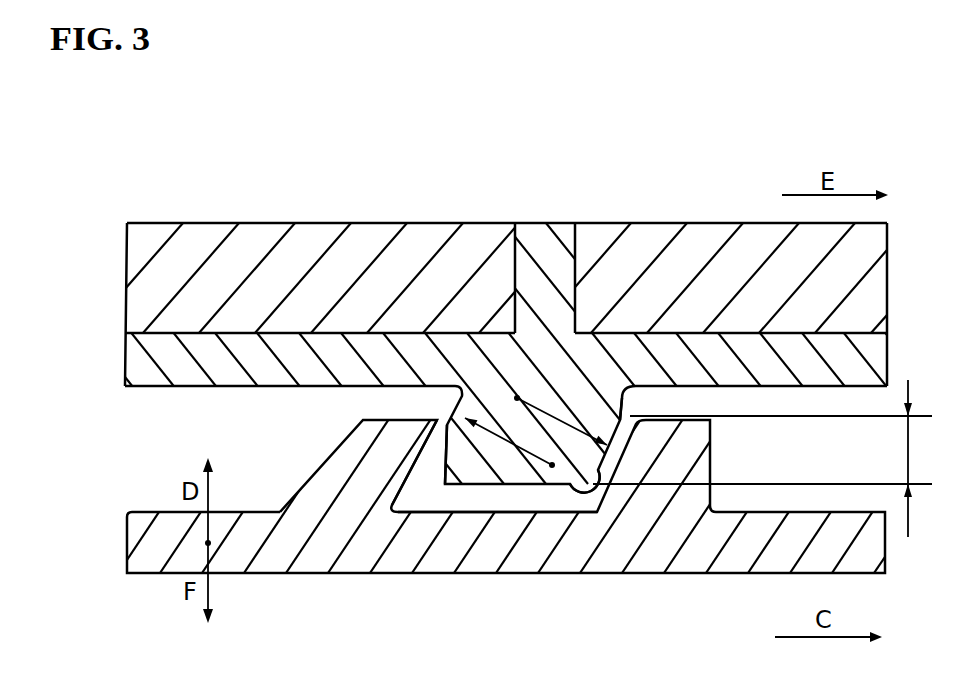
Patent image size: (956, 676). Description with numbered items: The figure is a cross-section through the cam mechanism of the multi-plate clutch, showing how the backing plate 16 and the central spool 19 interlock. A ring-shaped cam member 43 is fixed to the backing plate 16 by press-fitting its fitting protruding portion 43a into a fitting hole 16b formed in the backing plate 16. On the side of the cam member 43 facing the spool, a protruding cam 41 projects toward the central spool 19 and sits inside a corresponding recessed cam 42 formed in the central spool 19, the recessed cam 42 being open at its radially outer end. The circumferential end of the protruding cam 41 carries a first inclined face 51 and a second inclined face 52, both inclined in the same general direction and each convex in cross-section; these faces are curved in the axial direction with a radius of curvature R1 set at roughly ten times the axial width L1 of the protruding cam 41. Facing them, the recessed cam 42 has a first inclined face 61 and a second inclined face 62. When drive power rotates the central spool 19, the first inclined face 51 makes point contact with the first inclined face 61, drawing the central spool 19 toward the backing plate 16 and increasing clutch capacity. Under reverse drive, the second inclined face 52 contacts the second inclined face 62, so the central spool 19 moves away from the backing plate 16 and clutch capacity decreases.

The backing plate 16 is at (187, 285).
The fitting hole 16b is at (580, 282).
The central spool 19 is at (163, 543).
The protruding cam 41 is at (504, 458).
The recessed cam 42 is at (365, 458).
The cam member 43 is at (188, 372).
The fitting protruding portion 43a is at (488, 442).
The first inclined face 51 is at (443, 442).
The second inclined face 52 is at (622, 415).
The first inclined face 61 is at (410, 470).
The second inclined face 62 is at (571, 484).
The radius of curvature R1 is at (517, 398).
The width in the axial direction L1 is at (766, 458).